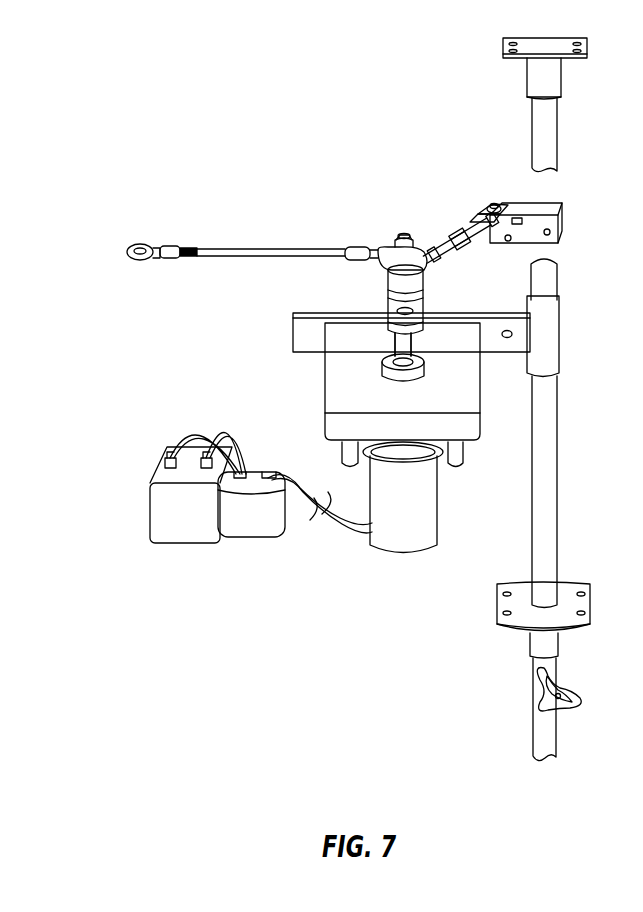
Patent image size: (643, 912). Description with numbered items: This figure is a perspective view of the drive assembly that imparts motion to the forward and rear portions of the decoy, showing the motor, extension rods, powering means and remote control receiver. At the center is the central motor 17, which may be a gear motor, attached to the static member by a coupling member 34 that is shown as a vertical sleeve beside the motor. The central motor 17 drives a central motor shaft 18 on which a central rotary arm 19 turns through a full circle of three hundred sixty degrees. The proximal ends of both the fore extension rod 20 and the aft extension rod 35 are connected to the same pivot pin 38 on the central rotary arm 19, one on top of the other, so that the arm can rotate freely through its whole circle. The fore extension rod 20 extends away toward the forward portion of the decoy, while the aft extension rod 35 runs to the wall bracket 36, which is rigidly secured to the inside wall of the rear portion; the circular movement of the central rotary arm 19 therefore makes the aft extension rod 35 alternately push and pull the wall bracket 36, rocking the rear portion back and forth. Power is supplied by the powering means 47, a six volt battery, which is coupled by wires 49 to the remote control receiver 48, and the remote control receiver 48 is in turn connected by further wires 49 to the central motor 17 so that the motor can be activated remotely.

The central motor 17 is at (437, 520).
The central motor shaft 18 is at (378, 374).
The central rotary arm 19 is at (425, 306).
The fore extension rod 20 is at (215, 262).
The coupling member 34 is at (560, 345).
The aft extension rod 35 is at (470, 250).
The wall bracket 36 is at (562, 226).
The pivot pin 38 is at (400, 236).
The powering means 47 is at (150, 494).
The remote control receiver 48 is at (238, 540).
The wires 49 is at (298, 462).